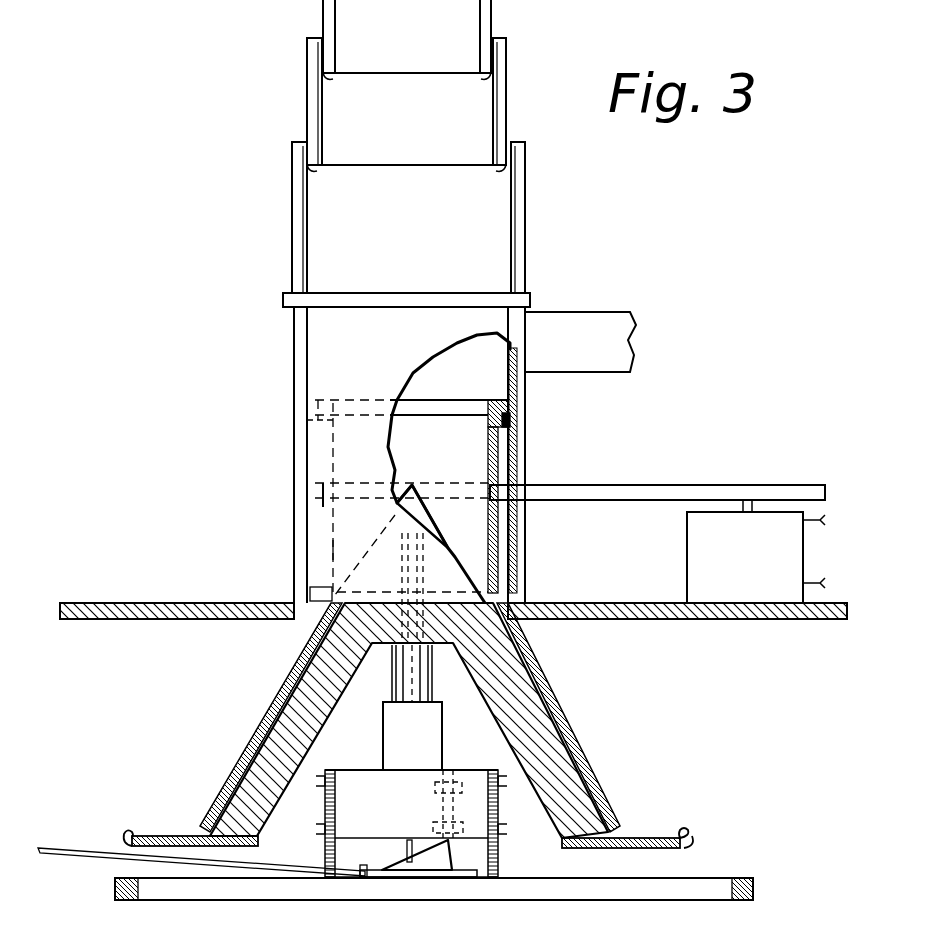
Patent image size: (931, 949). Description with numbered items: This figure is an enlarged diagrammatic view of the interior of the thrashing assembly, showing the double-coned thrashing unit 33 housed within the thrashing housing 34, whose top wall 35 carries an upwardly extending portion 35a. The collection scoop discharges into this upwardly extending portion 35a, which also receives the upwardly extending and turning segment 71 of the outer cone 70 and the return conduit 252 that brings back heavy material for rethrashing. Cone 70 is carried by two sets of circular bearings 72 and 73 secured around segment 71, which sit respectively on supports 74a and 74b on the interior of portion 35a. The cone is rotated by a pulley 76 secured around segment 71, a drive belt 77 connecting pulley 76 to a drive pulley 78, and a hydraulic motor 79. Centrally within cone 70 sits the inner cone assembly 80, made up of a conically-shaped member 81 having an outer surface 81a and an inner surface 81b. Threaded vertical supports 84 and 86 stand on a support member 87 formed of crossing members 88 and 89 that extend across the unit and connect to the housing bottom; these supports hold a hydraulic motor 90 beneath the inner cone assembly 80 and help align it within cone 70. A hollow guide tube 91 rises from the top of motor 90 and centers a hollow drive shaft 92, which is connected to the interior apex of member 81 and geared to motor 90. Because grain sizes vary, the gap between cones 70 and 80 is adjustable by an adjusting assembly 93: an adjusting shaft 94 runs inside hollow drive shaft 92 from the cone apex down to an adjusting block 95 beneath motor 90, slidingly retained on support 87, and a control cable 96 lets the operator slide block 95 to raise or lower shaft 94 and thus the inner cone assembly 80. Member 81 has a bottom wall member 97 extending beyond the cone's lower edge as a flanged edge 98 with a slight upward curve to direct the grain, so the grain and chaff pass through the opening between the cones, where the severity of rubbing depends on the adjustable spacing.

The double-coned thrashing unit 33 is at (592, 735).
The thrashing housing 34 is at (158, 580).
The top wall 35 is at (107, 603).
The upwardly extending portion 35a is at (294, 357).
The cone 70 is at (257, 695).
The upwardly extending and turning segment 71 is at (330, 550).
The circular bearings 72 is at (322, 402).
The circular bearings 73 is at (322, 589).
The support 74a is at (308, 420).
The support 74b is at (312, 618).
The pulley 76 is at (323, 503).
The drive belt 77 is at (640, 485).
The drive pulley 78 is at (786, 485).
The hydraulic motor 79 is at (765, 570).
The inner cone assembly 80 is at (245, 738).
The conically-shaped member 81 is at (507, 680).
The outer surface 81a is at (583, 777).
The inner surface 81b is at (312, 738).
The threaded vertical support 84 is at (326, 850).
The threaded vertical support 86 is at (498, 865).
The support member 87 is at (287, 910).
The crossing member 88 is at (197, 902).
The crossing member 89 is at (687, 900).
The hydraulic motor 90 is at (393, 811).
The hollow guide tube 91 is at (442, 743).
The hollow drive shaft 92 is at (447, 650).
The adjusting assembly 93 is at (409, 886).
The adjusting shaft 94 is at (391, 673).
The adjusting block 95 is at (447, 860).
The control cable 96 is at (42, 849).
The bottom wall member 97 is at (573, 853).
The flanged edge 98 is at (690, 838).
The return conduit 252 is at (605, 350).